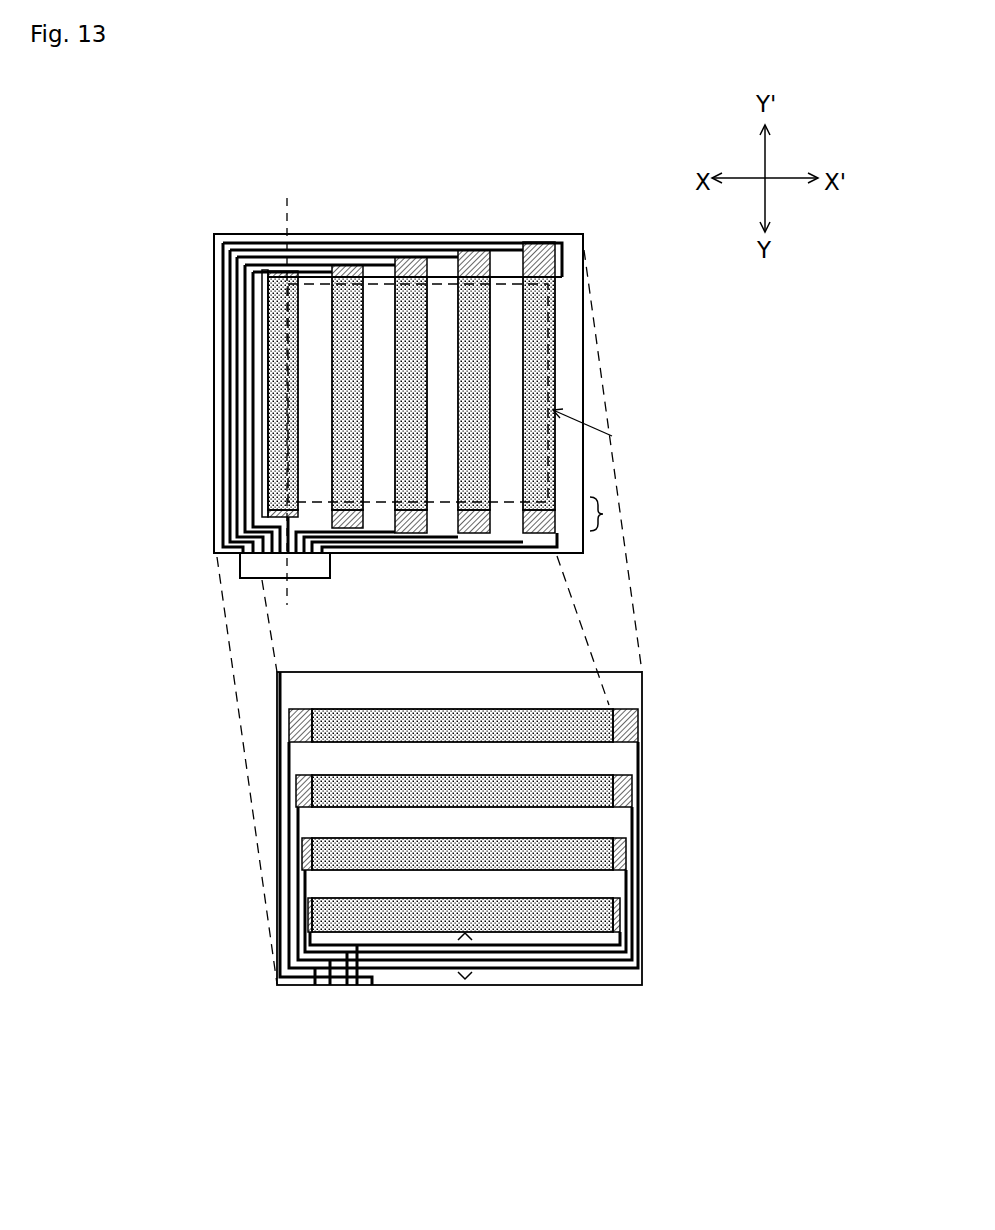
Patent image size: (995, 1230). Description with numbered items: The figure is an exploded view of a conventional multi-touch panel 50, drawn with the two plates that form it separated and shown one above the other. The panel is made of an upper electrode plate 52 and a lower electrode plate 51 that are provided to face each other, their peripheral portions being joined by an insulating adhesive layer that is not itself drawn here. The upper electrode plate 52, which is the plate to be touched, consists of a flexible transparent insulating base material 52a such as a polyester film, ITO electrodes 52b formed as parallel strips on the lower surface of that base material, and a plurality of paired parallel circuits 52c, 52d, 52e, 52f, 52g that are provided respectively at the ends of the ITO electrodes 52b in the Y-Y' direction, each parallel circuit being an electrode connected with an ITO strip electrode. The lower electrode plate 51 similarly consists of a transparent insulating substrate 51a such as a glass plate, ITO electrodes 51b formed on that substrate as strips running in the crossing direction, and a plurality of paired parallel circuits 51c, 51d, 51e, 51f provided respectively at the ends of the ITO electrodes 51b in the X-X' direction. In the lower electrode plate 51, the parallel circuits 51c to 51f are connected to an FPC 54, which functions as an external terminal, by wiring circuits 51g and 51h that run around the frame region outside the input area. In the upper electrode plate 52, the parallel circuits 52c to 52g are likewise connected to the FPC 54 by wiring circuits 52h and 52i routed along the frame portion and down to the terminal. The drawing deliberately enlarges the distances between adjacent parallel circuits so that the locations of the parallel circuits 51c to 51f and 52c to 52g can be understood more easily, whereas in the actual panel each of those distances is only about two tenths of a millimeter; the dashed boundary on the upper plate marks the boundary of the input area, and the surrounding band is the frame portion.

The multi-touch panel 50 is at (140, 242).
The upper electrode plate 52 is at (165, 382).
The flexible transparent insulating base material 52a is at (578, 380).
The ITO electrodes 52b is at (540, 297).
The parallel circuit 52c is at (285, 275).
The parallel circuit 52d is at (345, 268).
The parallel circuit 52e is at (410, 262).
The parallel circuit 52f is at (470, 255).
The parallel circuit 52g is at (538, 248).
The wiring circuit 52h is at (255, 370).
The wiring circuit 52i is at (330, 555).
The FPC 54 is at (240, 565).
The lower electrode plate 51 is at (168, 833).
The transparent insulating substrate 51a is at (645, 688).
The ITO electrodes 51b is at (585, 737).
The parallel circuit 51c is at (300, 725).
The parallel circuit 51d is at (302, 790).
The parallel circuit 51e is at (305, 855).
The parallel circuit 51f is at (310, 918).
The wiring circuit 51g is at (275, 963).
The wiring circuit 51h is at (465, 978).